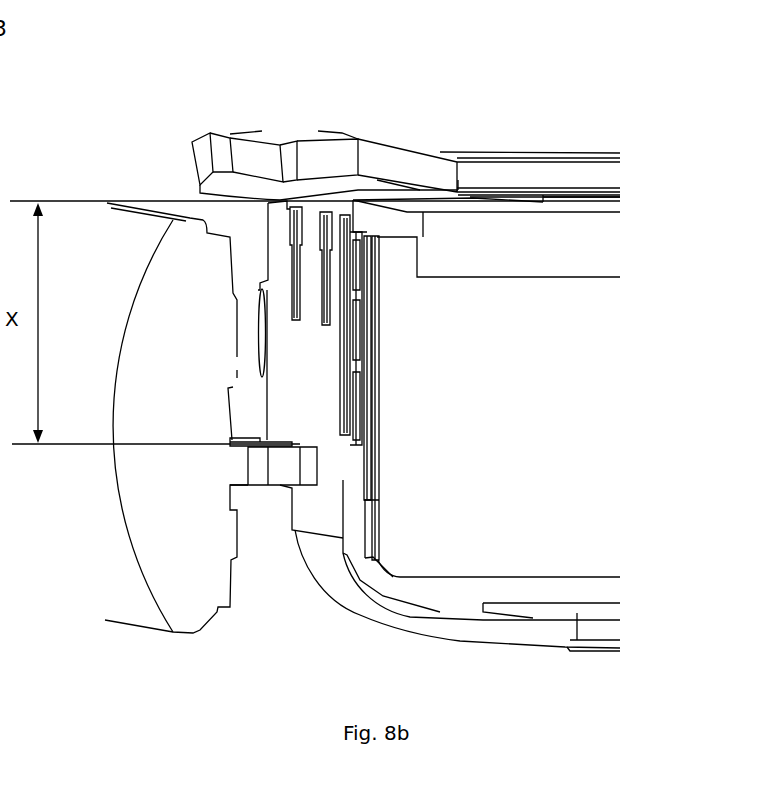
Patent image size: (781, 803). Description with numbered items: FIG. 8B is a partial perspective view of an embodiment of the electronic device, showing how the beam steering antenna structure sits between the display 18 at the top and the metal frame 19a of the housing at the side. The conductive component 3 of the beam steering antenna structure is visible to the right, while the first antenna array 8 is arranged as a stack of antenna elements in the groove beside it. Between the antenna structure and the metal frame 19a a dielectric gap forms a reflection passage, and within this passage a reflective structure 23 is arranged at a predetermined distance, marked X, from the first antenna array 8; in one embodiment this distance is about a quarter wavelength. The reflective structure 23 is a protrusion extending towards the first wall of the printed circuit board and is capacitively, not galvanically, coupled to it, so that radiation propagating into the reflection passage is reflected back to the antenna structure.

The display 18 is at (507, 178).
The conductive component 3 is at (417, 236).
The first antenna array 8 is at (283, 250).
The metal frame 19a is at (189, 518).
The reflective structure 23 is at (268, 470).